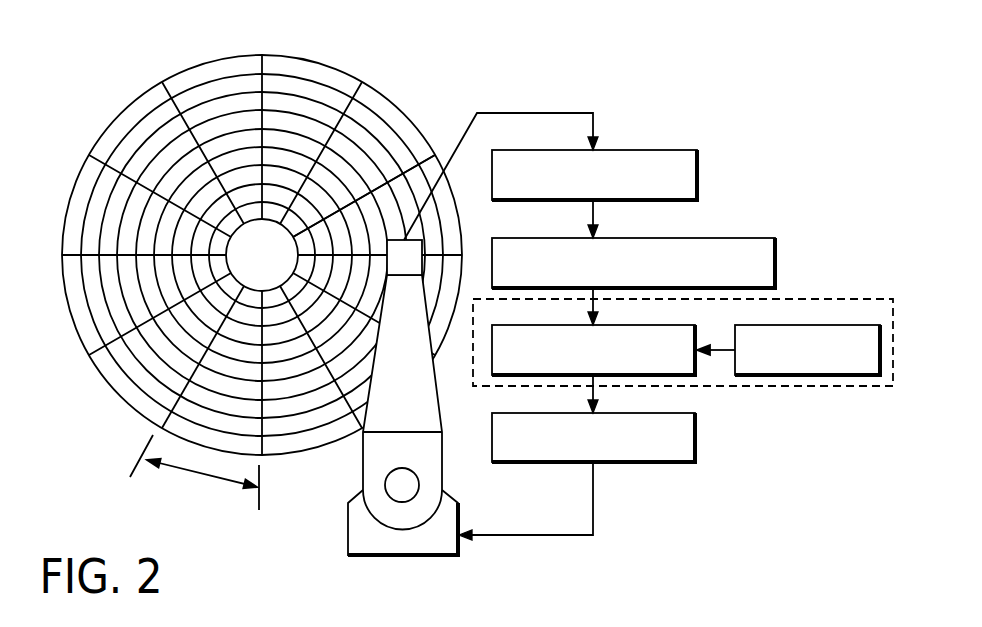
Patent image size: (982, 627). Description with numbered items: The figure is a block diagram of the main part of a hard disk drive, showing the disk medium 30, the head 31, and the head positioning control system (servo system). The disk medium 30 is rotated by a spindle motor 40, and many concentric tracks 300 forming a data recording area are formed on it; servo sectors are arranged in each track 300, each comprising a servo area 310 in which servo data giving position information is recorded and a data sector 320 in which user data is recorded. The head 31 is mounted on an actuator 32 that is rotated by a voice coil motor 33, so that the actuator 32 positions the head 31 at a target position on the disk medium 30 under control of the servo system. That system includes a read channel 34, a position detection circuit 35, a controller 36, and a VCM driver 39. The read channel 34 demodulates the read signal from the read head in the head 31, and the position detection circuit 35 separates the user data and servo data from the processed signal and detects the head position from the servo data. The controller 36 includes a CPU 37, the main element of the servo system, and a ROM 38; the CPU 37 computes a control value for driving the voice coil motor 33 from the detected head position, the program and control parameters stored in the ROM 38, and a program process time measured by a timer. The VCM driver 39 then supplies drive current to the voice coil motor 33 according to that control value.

The disk medium 30 is at (67, 308).
The tracks 300 is at (108, 368).
The servo area 310 is at (152, 422).
The data sector 320 is at (198, 477).
The spindle motor 40 is at (398, 128).
The head 31 is at (424, 252).
The actuator 32 is at (441, 420).
The voice coil motor 33 is at (400, 557).
The read channel 34 is at (699, 174).
The position detection circuit 35 is at (777, 264).
The controller 36 is at (876, 298).
The CPU 37 is at (673, 377).
The ROM 38 is at (857, 377).
The VCM driver 39 is at (655, 464).